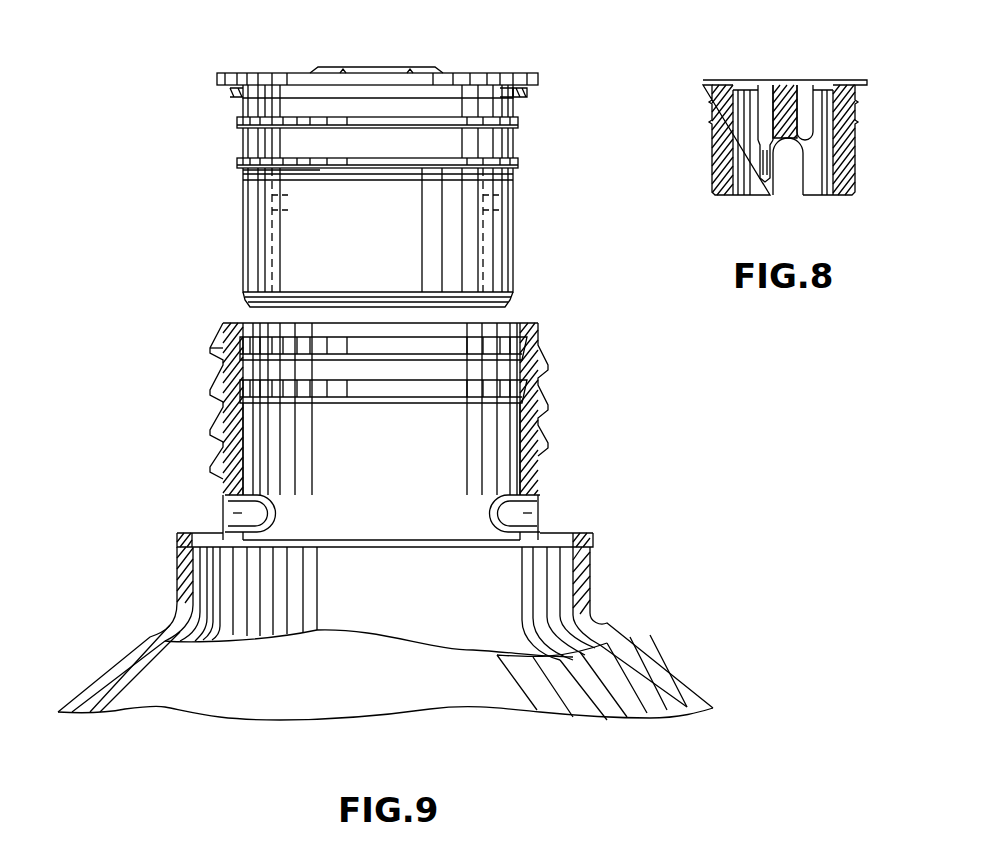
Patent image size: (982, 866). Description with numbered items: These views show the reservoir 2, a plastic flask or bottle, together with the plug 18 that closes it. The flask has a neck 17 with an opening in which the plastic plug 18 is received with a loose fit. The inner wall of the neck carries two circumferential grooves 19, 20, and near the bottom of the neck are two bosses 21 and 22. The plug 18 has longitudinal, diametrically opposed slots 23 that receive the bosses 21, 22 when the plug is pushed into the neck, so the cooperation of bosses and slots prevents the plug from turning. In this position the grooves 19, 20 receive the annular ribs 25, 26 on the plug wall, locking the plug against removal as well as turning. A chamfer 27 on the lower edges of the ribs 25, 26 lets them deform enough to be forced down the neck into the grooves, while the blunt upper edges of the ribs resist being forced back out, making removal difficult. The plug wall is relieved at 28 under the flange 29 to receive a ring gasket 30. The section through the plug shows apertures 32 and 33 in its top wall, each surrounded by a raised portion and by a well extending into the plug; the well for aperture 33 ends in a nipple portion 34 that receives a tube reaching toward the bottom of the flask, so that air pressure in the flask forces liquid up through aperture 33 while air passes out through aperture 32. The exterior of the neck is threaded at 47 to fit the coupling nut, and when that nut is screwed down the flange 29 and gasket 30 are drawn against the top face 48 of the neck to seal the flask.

In FIG. 9, the reservoir 2 is at (640, 665).
In FIG. 9, the neck 17 is at (533, 479).
In FIG. 9, the plug 18 is at (455, 257).
In FIG. 8, the plug 18 is at (720, 173).
In FIG. 9, the circumferential groove 19 is at (529, 389).
In FIG. 9, the circumferential groove 20 is at (212, 350).
In FIG. 9, the boss 21 is at (491, 512).
In FIG. 9, the boss 22 is at (274, 508).
In FIG. 9, the longitudinal slot 23 is at (487, 214).
In FIG. 8, the longitudinal slot 23 is at (790, 185).
In FIG. 9, the annular rib 25 is at (519, 163).
In FIG. 9, the annular rib 26 is at (519, 123).
In FIG. 9, the chamfer 27 is at (322, 175).
In FIG. 9, the relieved portion of plug wall 28 is at (508, 94).
In FIG. 9, the flange 29 is at (538, 75).
In FIG. 9, the ring gasket 30 is at (527, 93).
In FIG. 8, the aperture 32 is at (806, 88).
In FIG. 8, the aperture 33 is at (765, 88).
In FIG. 8, the nipple portion 34 is at (765, 185).
In FIG. 9, the threads 47 is at (550, 408).
In FIG. 9, the top face of neck 48 is at (527, 326).